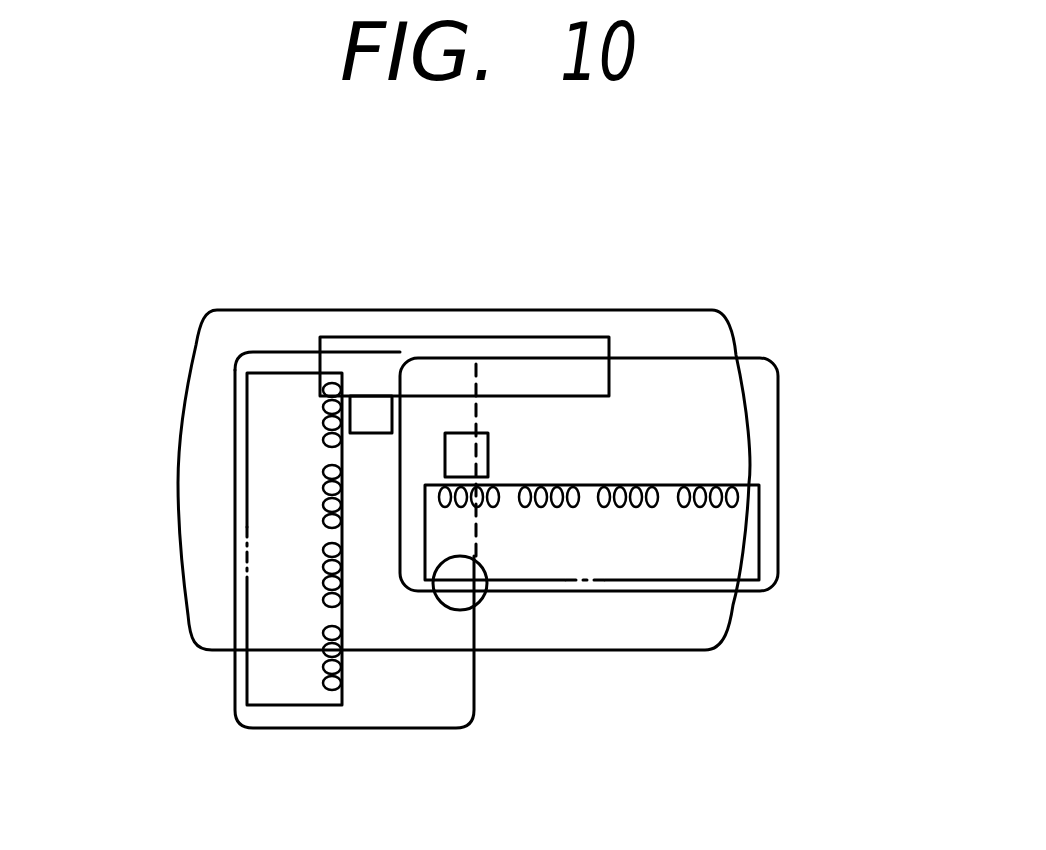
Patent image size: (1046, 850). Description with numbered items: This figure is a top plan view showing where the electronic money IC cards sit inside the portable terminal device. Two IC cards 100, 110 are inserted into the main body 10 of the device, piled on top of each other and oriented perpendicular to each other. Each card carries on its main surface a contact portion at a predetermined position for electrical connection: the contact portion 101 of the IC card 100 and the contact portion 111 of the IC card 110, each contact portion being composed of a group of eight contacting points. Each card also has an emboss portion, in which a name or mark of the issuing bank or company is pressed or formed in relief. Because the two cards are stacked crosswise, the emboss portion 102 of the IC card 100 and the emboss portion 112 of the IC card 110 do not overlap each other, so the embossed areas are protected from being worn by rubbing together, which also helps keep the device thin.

The main body 10 is at (677, 328).
The electronic money IC card 100 is at (765, 386).
The contact portion 101 is at (458, 452).
The emboss portion 102 is at (608, 507).
The electronic money IC card 110 is at (458, 701).
The contact portion 111 is at (371, 400).
The emboss portion 112 is at (320, 482).